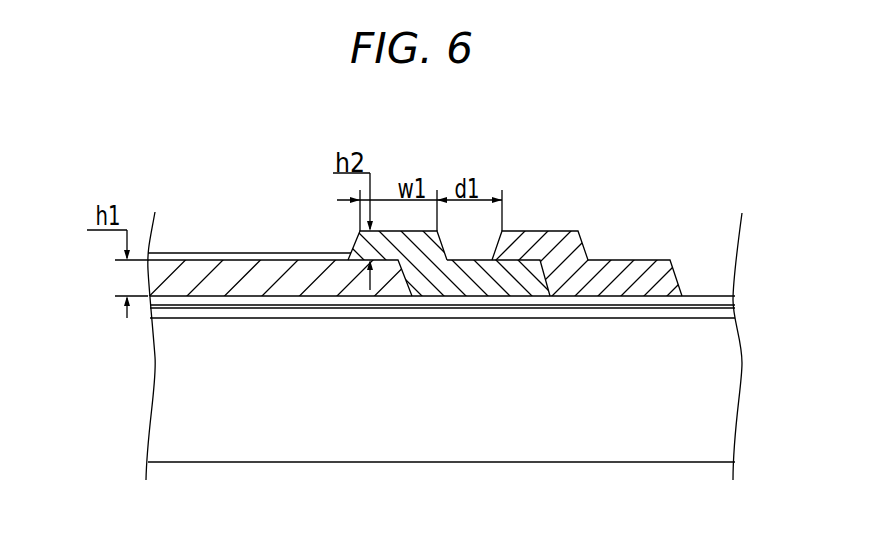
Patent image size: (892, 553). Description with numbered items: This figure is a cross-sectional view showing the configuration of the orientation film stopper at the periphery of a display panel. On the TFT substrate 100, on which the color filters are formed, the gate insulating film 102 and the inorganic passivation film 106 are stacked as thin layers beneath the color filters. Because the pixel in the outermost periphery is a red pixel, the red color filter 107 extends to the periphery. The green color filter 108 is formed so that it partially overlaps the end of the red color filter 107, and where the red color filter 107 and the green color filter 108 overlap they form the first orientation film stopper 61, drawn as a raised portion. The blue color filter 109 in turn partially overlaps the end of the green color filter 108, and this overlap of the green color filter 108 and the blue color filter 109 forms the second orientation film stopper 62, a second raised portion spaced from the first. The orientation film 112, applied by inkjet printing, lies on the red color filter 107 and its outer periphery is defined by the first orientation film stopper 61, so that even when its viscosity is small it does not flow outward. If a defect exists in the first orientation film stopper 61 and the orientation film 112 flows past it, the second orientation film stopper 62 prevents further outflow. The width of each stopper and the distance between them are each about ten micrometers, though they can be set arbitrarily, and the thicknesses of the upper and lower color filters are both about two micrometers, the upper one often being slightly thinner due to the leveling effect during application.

The TFT substrate 100 is at (555, 440).
The gate insulating film 102 is at (457, 313).
The inorganic passivation film 106 is at (388, 302).
The red color filter 107 is at (292, 285).
The green color filter 108 is at (472, 278).
The blue color filter 109 is at (628, 283).
The orientation film 112 is at (210, 258).
The first orientation film stopper 61 is at (392, 231).
The second orientation film stopper 62 is at (535, 231).